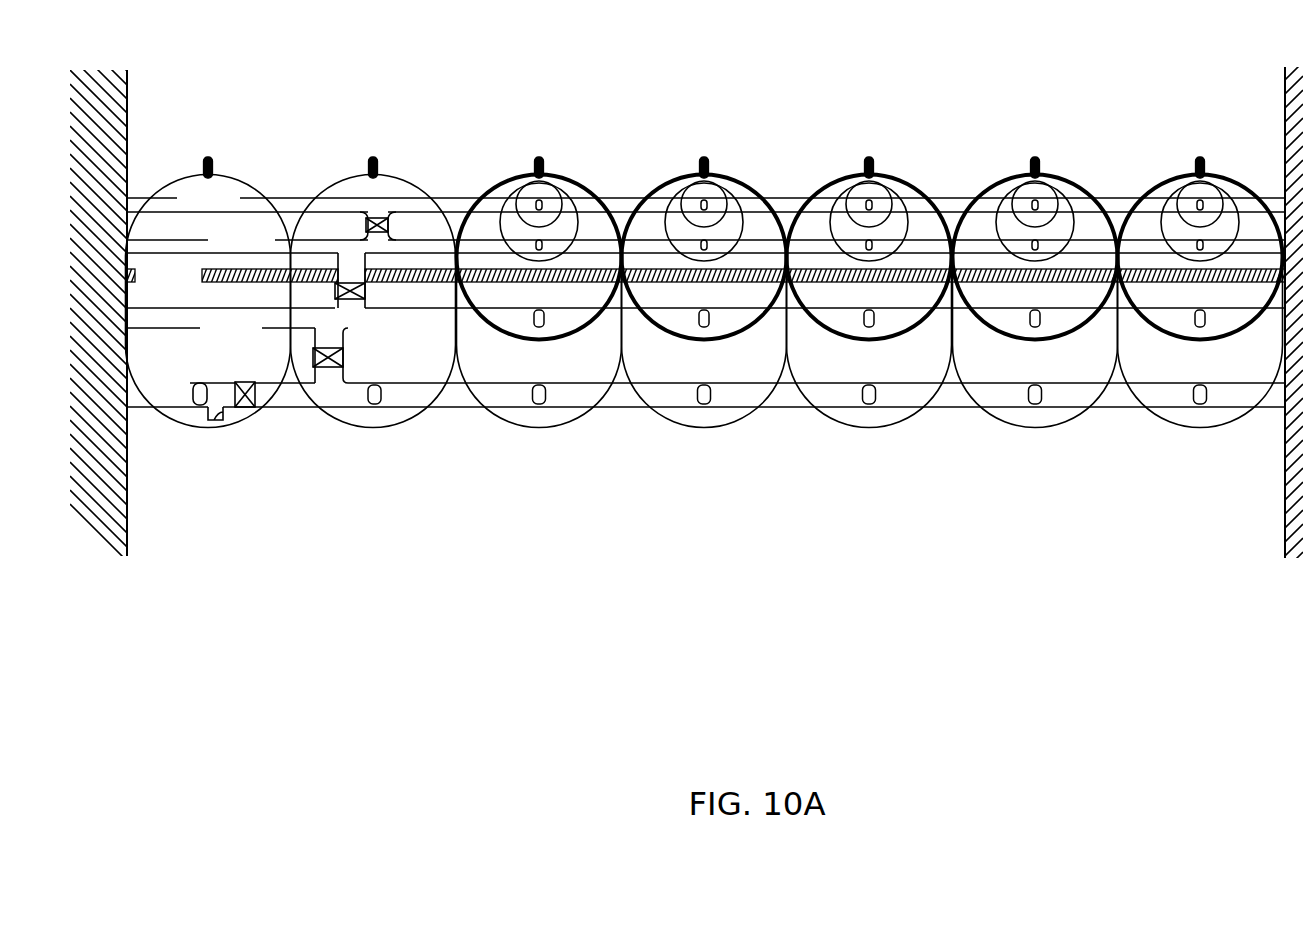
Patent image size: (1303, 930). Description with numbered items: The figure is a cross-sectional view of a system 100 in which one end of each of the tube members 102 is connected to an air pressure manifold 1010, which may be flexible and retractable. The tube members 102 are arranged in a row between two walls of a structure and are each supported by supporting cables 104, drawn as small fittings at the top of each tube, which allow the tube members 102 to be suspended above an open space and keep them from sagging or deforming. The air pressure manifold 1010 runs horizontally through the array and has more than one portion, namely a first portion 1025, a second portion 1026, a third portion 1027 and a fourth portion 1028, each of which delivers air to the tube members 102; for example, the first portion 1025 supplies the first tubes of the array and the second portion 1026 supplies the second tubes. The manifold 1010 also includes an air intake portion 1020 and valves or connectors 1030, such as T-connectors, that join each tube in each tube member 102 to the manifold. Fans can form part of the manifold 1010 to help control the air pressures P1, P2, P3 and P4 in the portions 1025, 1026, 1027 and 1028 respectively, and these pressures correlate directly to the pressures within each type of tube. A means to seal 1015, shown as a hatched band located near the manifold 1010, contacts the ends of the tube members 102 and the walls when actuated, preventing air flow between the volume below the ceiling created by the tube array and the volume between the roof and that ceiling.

The system 100 is at (699, 18).
The tube members 102 is at (167, 184).
The supporting cables 104 is at (214, 172).
The air pressure manifold 1010 is at (865, 212).
The means to seal 1015 is at (143, 293).
The air intake portion 1020 is at (214, 420).
The first portion 1025 is at (133, 405).
The second portion 1026 is at (203, 338).
The third portion 1027 is at (217, 250).
The fourth portion 1028 is at (183, 208).
The valves or connectors 1030 is at (535, 244).
The air pressure P1 is at (416, 395).
The air pressure P2 is at (418, 317).
The air pressure P3 is at (447, 248).
The air pressure P4 is at (410, 205).